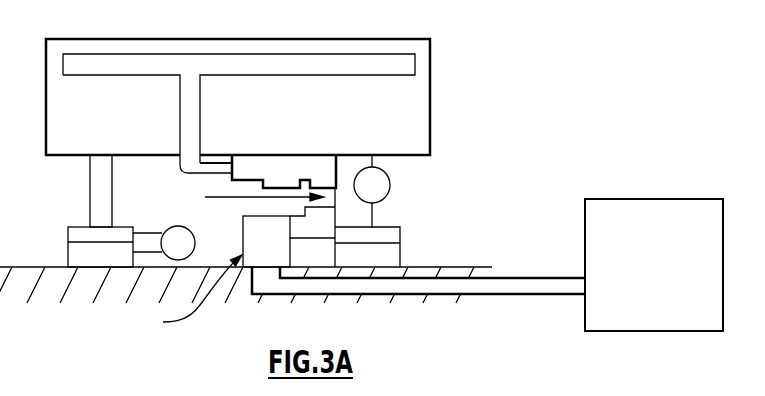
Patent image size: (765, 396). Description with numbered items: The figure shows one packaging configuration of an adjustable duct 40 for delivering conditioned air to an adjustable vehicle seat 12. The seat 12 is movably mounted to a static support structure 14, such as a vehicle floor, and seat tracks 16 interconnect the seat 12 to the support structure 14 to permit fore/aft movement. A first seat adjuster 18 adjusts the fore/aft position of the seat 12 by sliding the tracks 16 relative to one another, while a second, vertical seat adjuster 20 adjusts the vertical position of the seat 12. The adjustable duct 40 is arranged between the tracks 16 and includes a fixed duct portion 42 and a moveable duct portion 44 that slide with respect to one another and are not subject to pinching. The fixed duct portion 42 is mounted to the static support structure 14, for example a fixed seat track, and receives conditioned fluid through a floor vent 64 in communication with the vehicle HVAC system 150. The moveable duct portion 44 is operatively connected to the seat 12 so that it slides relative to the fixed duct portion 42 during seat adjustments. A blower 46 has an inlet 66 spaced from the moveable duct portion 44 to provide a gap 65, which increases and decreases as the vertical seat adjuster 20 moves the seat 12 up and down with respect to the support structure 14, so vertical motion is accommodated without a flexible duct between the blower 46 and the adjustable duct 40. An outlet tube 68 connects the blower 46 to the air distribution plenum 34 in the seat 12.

The vehicle seat 12 is at (446, 87).
The air distribution plenum 34 is at (281, 54).
The outlet tube 68 is at (197, 165).
The blower 46 is at (267, 165).
The inlet 66 is at (315, 165).
The moveable duct portion 44 is at (332, 208).
The second seat adjuster 20 is at (390, 184).
The seat tracks 16 is at (389, 242).
The fixed duct portion 42 is at (252, 236).
The first seat adjuster 18 is at (172, 236).
The gap 65 is at (248, 199).
The static support structure 14 is at (41, 268).
The adjustable duct 40 is at (187, 292).
The floor vent 64 is at (252, 292).
The HVAC system 150 is at (673, 272).